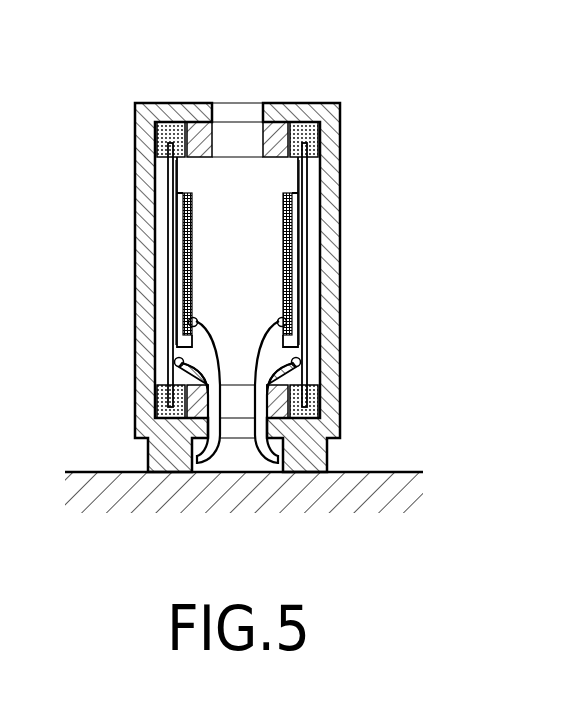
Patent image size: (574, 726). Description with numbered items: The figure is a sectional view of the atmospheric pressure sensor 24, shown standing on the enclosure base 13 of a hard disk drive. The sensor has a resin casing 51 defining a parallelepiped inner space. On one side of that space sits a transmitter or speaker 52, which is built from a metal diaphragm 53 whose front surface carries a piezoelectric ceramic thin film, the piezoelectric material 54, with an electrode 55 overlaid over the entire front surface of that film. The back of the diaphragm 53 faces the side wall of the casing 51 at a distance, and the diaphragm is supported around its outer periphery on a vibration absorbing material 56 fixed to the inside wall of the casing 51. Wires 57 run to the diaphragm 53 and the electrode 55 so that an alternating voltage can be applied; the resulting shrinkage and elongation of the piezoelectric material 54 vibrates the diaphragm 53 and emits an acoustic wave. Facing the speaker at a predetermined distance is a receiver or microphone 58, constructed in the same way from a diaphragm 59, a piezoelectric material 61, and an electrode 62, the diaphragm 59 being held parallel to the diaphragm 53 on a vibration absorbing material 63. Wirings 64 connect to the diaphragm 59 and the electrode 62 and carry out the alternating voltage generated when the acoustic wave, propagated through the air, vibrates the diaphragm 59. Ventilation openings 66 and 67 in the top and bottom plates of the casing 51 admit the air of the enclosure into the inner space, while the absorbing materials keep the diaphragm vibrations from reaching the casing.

The enclosure base 13 is at (405, 472).
The atmospheric pressure sensor 24 is at (236, 285).
The casing 51 is at (327, 102).
The speaker 52 is at (165, 187).
The diaphragm 53 is at (176, 233).
The piezoelectric material 54 is at (180, 263).
The electrode 55 is at (190, 207).
The vibration absorbing material 56 is at (152, 128).
The wires 57 is at (175, 384).
The microphone 58 is at (308, 187).
The diaphragm 59 is at (305, 228).
The piezoelectric material 61 is at (297, 253).
The electrode 62 is at (287, 237).
The vibration absorbing material 63 is at (318, 137).
The wirings 64 is at (300, 384).
The ventilation opening 66 is at (262, 105).
The ventilation opening 67 is at (213, 433).